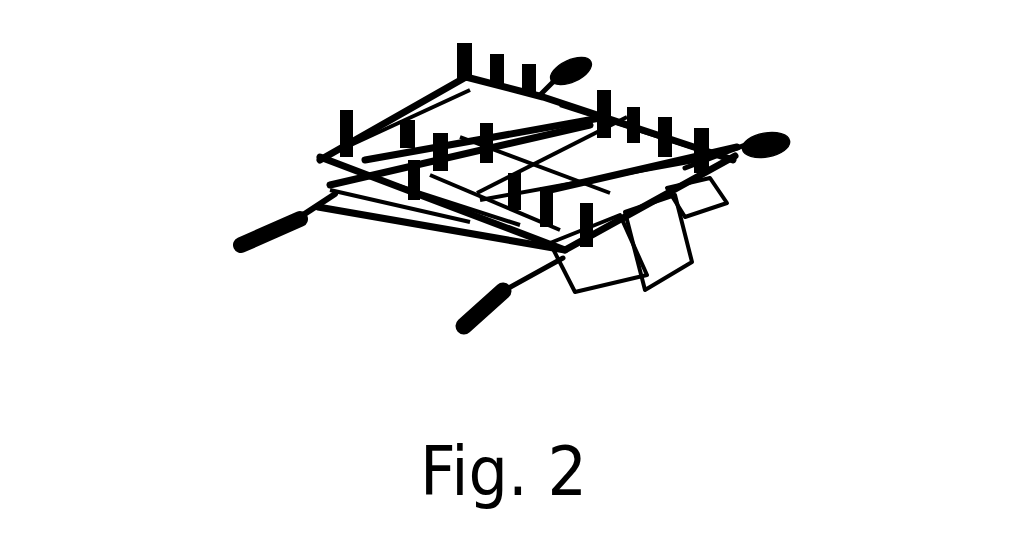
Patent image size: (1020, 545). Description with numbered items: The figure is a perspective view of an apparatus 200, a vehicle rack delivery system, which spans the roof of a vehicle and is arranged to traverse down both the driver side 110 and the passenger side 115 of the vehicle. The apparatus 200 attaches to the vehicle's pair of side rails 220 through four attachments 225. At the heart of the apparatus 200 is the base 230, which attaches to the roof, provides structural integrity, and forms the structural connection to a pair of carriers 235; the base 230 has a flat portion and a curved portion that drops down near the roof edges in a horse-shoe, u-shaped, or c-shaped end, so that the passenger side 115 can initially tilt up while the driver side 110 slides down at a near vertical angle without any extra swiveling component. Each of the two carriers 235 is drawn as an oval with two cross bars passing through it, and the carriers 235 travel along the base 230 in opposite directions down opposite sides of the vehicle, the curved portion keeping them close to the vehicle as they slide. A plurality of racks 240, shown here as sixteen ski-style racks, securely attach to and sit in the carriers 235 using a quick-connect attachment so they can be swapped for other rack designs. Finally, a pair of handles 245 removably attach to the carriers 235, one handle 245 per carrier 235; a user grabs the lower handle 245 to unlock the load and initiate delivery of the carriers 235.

The driver side 110 is at (658, 303).
The passenger side 115 is at (383, 97).
The apparatus 200 is at (457, 205).
The side rails 220 is at (314, 203).
The attachments 225 is at (238, 240).
The base 230 is at (410, 208).
The carriers 235 is at (440, 213).
The racks 240 is at (477, 207).
The handles 245 is at (690, 263).